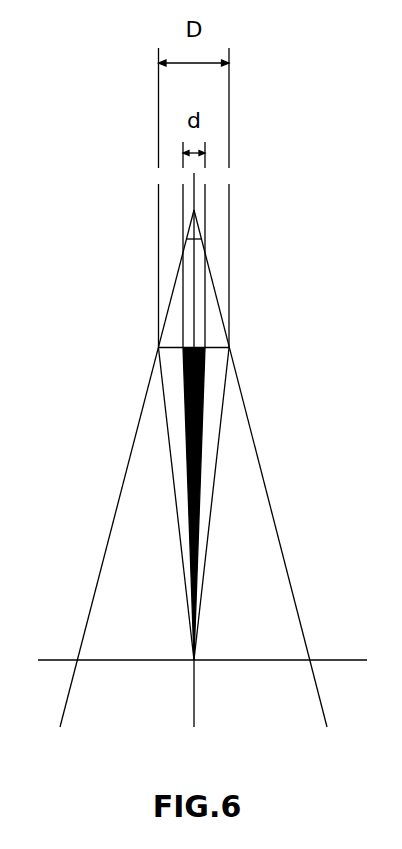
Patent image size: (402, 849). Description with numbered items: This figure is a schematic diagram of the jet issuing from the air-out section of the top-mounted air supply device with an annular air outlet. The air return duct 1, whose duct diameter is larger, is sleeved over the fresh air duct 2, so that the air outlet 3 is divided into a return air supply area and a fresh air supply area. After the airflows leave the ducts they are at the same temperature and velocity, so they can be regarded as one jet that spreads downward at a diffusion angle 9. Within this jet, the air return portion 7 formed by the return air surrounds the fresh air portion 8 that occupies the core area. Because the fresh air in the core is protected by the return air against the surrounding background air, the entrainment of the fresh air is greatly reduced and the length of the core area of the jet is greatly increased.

The air return duct 1 is at (158, 199).
The fresh air duct 2 is at (183, 285).
The air outlet 3 is at (158, 348).
The air return portion 7 is at (166, 413).
The fresh air portion 8 is at (188, 483).
The diffusion angle 9 is at (208, 233).